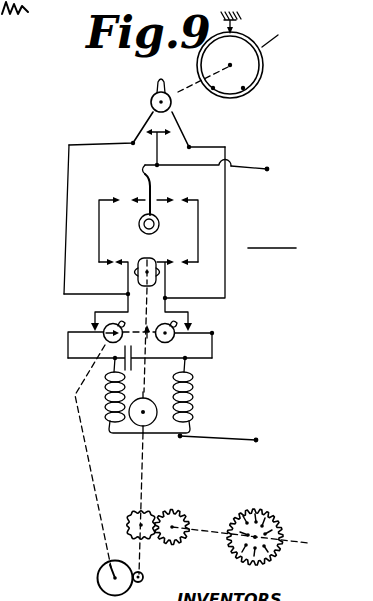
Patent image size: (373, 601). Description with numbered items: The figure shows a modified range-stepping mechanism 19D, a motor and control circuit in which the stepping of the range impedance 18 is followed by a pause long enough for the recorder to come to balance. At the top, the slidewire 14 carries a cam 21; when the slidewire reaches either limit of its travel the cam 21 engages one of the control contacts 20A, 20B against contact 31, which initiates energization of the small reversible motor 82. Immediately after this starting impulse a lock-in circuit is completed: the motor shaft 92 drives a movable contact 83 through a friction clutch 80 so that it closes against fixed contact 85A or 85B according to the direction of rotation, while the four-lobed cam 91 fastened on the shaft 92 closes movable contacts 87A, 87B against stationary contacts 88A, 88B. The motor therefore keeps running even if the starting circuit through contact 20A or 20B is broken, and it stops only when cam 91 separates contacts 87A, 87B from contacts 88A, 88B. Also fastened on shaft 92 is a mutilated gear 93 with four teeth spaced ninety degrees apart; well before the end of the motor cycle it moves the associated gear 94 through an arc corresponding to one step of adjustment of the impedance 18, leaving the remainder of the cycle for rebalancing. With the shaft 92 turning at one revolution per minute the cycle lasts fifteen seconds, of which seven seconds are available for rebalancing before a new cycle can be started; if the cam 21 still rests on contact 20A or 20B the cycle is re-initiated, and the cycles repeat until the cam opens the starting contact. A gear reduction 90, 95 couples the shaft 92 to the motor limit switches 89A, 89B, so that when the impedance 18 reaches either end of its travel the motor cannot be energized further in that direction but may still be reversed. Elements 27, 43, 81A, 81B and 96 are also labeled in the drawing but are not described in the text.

The slidewire 14 is at (262, 77).
The pointer 27 is at (279, 37).
The cam 21 is at (151, 96).
The control contact 20A is at (139, 122).
The control contact 20B is at (192, 126).
The contact 31 is at (150, 144).
The range-stepping mechanism modification 19D is at (180, 219).
The conductor 43 is at (250, 172).
The movable contact 83 is at (160, 207).
The friction clutch 80 is at (160, 233).
The fixed contact 85A is at (108, 199).
The fixed contact 85B is at (191, 200).
The movable contact 87A is at (126, 261).
The movable contact 87B is at (168, 289).
The four-lobed cam 91 is at (157, 263).
The stationary contact 88A is at (104, 263).
The stationary contact 88B is at (226, 288).
The conductor 81A is at (92, 315).
The conductor 81B is at (200, 322).
The motor limit switch 89A is at (104, 340).
The motor limit switch 89B is at (194, 353).
The motor shaft 92 is at (148, 344).
The reversible motor 82 is at (173, 391).
The drive shaft 96 is at (74, 431).
The mutilated gear 93 is at (136, 509).
The associated gear 94 is at (176, 532).
The range impedance 18 is at (262, 509).
The gear reduction 95 is at (98, 577).
The gear reduction 90 is at (144, 577).